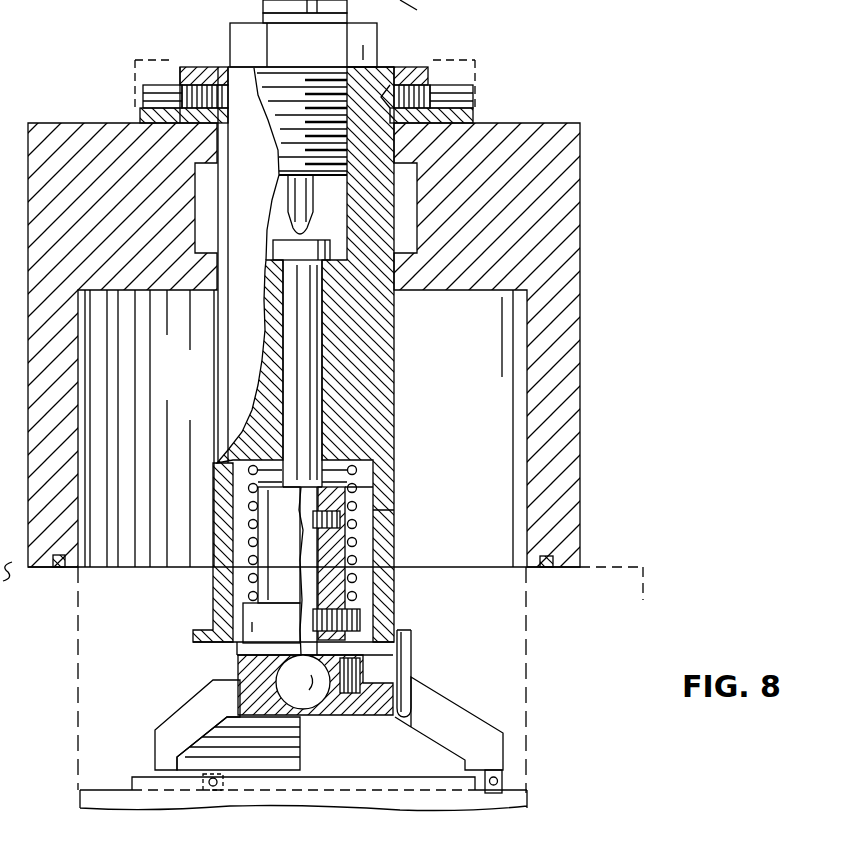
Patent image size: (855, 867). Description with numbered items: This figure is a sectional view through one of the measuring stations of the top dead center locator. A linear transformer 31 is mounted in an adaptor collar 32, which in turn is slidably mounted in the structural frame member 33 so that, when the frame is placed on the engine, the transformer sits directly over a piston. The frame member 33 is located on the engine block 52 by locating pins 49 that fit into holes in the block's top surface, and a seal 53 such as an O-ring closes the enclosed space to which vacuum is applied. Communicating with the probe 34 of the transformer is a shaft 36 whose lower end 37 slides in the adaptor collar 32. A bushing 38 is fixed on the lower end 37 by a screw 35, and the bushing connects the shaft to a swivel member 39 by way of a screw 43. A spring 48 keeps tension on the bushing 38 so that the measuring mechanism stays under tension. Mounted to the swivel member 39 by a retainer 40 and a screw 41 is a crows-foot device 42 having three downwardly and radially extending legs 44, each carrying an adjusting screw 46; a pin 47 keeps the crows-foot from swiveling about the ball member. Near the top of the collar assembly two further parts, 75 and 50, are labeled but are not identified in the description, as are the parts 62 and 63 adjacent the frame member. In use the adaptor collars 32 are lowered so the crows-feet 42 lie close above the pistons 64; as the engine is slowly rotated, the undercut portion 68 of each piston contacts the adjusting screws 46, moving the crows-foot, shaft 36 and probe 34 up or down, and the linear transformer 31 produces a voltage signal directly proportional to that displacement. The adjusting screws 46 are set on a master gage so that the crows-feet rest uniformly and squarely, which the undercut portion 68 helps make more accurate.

The linear transformer 31 is at (262, 5).
The adaptor collar 32 is at (203, 67).
The structural frame member 33 is at (50, 123).
The probe 34 is at (313, 230).
The screw 35 is at (341, 526).
The shaft 36 is at (297, 351).
The lower end 37 is at (314, 546).
The bushing 38 is at (270, 517).
The swivel member 39 is at (283, 672).
The retainer 40 is at (280, 677).
The screw 41 is at (358, 670).
The crows-foot device 42 is at (481, 713).
The screw 43 is at (358, 620).
The legs 44 is at (173, 727).
The adjusting screw 46 is at (226, 779).
The pin 47 is at (412, 647).
The spring 48 is at (352, 495).
The locating pins 49 is at (475, 10).
The nut 50 is at (229, 33).
The engine block 52 is at (618, 563).
The seal 53 is at (60, 568).
The flange plate 62 is at (137, 115).
The bolt 63 is at (158, 90).
The pistons 64 is at (145, 777).
The undercut portion 68 is at (95, 790).
The washer 75 is at (304, 53).